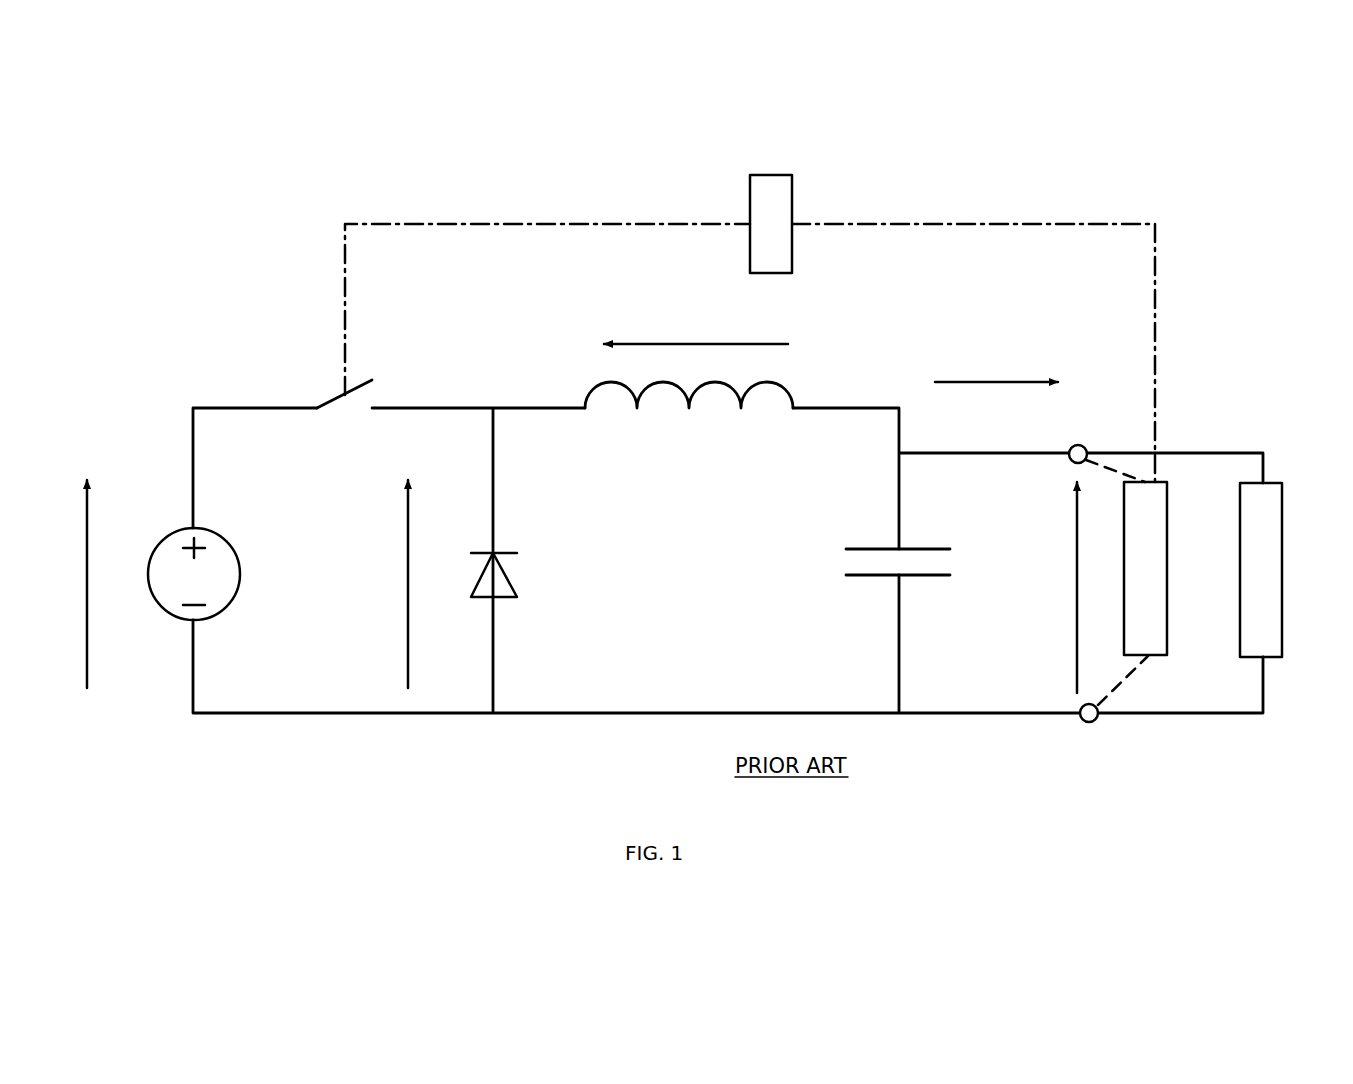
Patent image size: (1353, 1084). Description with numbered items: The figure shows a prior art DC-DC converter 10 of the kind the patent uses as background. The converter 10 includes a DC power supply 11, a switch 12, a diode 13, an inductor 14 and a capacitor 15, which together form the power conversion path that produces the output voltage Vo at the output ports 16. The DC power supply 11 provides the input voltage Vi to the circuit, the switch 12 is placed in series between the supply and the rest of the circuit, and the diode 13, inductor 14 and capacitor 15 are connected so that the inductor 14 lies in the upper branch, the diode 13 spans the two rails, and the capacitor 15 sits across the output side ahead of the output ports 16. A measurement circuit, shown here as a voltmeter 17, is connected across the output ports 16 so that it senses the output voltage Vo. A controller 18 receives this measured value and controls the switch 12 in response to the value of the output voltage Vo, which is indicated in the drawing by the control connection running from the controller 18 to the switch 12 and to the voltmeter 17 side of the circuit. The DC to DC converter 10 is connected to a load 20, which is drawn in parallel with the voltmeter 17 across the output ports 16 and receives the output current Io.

The DC-DC converter 10 is at (284, 749).
The DC power supply 11 is at (205, 592).
The switch 12 is at (344, 401).
The diode 13 is at (517, 592).
The inductor 14 is at (602, 388).
The capacitor 15 is at (873, 547).
The output ports 16 is at (1070, 697).
The voltmeter 17 is at (1157, 582).
The controller 18 is at (784, 226).
The load 20 is at (1272, 577).